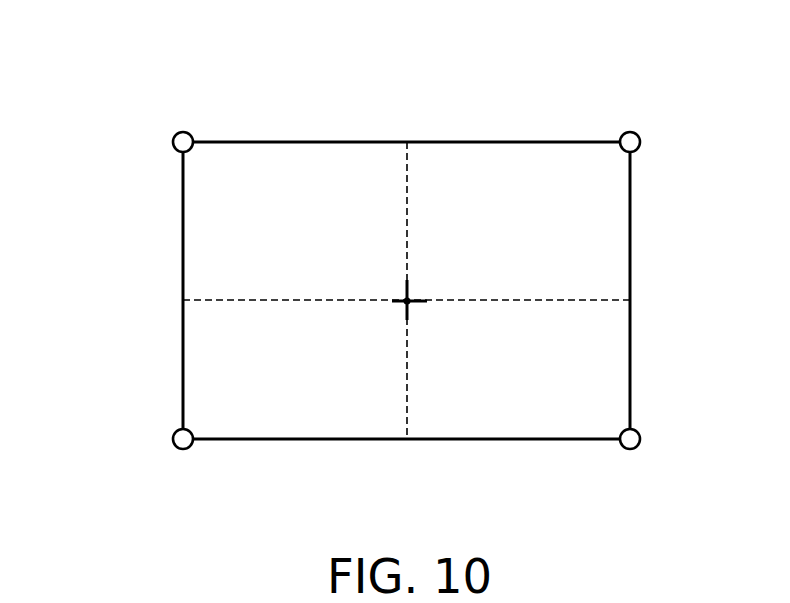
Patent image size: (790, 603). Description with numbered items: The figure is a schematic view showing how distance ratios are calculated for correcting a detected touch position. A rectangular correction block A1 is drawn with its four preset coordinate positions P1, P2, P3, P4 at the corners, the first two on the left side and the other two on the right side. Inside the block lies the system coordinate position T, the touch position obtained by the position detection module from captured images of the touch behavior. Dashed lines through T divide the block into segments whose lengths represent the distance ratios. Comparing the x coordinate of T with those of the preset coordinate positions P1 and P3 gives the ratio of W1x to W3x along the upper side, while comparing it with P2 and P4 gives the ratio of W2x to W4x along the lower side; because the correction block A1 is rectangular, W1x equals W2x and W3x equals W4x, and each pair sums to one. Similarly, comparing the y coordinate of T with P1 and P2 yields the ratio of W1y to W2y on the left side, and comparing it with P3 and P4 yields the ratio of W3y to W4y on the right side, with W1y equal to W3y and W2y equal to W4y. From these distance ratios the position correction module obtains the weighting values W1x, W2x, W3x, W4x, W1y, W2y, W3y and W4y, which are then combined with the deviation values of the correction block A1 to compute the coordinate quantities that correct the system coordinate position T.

The correction block A1 is at (110, 84).
The preset coordinate position P1 is at (184, 131).
The preset coordinate position P2 is at (184, 450).
The preset coordinate position P3 is at (629, 131).
The preset coordinate position P4 is at (630, 450).
The system coordinate position T is at (410, 304).
The weighting value W1x is at (295, 124).
The weighting value W2x is at (295, 463).
The weighting value W3x is at (518, 124).
The weighting value W4x is at (518, 463).
The weighting value W1y is at (155, 221).
The weighting value W2y is at (155, 369).
The weighting value W3y is at (659, 221).
The weighting value W4y is at (659, 369).